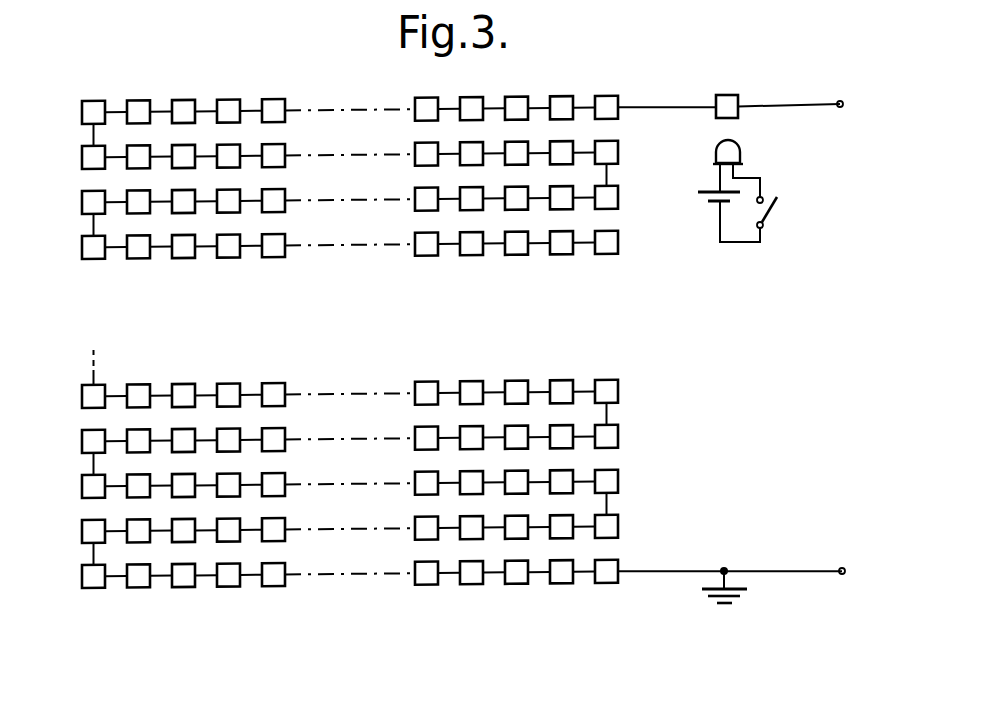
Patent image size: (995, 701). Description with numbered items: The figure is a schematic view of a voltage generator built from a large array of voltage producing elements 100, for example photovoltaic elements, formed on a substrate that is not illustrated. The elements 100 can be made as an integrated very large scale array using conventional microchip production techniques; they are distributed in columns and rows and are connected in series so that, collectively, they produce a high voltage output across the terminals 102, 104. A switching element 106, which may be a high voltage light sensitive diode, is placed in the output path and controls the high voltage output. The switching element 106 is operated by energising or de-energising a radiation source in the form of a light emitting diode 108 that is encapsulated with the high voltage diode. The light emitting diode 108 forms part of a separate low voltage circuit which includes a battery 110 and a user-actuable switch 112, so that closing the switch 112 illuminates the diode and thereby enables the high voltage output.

The voltage producing elements 100 is at (180, 103).
The terminal 102 is at (838, 107).
The terminal 104 is at (840, 574).
The switching element 106 is at (732, 95).
The light emitting diode 108 is at (716, 150).
The battery 110 is at (698, 197).
The user-actuable switch 112 is at (773, 213).